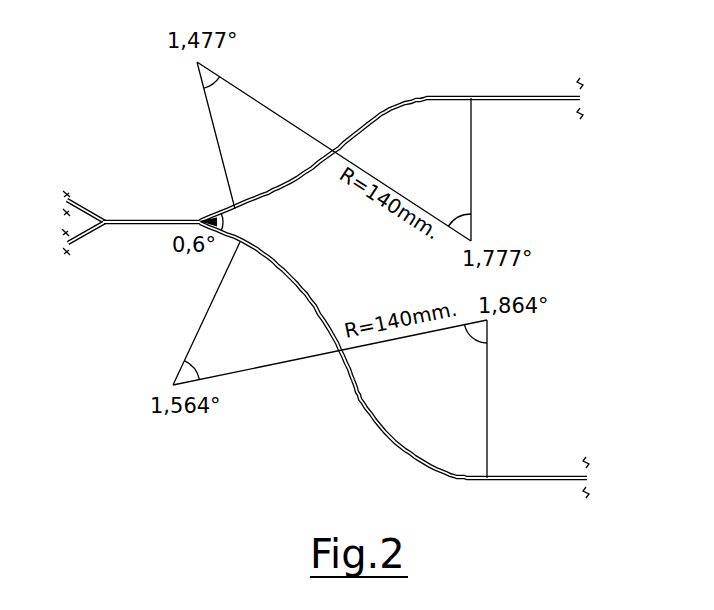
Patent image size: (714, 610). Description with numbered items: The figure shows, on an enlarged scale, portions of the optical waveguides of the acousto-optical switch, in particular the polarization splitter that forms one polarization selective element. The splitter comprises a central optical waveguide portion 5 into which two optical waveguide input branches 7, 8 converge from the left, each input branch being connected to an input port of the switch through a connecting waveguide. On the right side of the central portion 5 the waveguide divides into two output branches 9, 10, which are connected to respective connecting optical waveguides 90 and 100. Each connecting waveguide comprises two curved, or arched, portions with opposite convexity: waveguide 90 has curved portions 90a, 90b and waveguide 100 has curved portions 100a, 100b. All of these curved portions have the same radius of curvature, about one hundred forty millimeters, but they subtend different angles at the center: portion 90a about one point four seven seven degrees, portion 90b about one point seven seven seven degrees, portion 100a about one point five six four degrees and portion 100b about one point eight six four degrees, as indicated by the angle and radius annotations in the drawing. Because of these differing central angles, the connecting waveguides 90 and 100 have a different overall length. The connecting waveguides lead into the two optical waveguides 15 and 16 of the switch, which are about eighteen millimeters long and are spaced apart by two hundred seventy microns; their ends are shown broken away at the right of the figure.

The central optical waveguide portion 5 is at (143, 219).
The input branch 7 is at (77, 205).
The input branch 8 is at (78, 238).
The output branch 9 is at (226, 210).
The output branch 10 is at (229, 236).
The optical waveguide 15 is at (542, 97).
The optical waveguide 16 is at (538, 475).
The connecting optical waveguide 90 is at (335, 131).
The curved portion 90a is at (288, 186).
The curved portion 90b is at (402, 103).
The connecting optical waveguide 100 is at (335, 358).
The curved portion 100a is at (290, 270).
The curved portion 100b is at (385, 430).